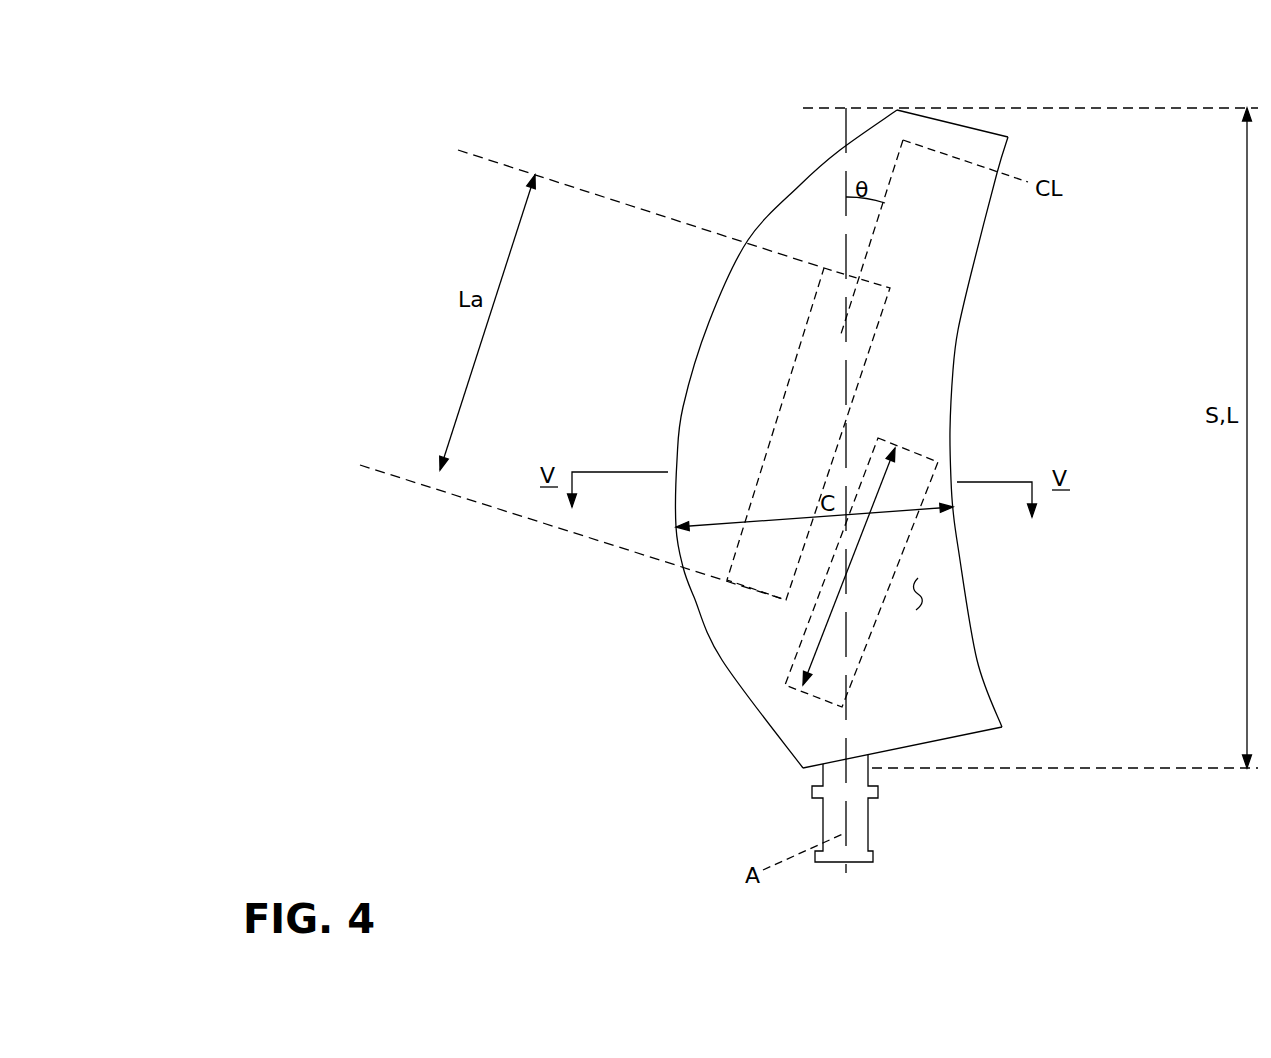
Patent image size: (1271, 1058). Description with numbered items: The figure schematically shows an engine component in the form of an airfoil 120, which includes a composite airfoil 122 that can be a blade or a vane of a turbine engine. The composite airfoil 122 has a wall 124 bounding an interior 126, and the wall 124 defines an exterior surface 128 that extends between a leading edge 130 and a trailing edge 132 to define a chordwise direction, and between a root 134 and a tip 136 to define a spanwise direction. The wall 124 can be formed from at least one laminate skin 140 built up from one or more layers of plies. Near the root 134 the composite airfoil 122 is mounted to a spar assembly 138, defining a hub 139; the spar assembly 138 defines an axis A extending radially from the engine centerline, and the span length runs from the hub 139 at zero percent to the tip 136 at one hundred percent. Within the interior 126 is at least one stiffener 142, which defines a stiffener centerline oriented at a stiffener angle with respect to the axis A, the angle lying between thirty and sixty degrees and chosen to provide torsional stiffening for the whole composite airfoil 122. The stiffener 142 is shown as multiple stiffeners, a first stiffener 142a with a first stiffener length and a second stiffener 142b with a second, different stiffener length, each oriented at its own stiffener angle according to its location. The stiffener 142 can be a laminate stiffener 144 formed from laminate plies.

The airfoil 120 is at (652, 125).
The composite airfoil 122 is at (957, 92).
The wall 124 is at (1015, 265).
The laminate skin 140 is at (923, 293).
The interior 126 is at (922, 598).
The exterior surface 128 is at (732, 453).
The leading edge 130 is at (678, 400).
The trailing edge 132 is at (953, 370).
The root 134 is at (967, 737).
The tip 136 is at (993, 132).
The spar assembly 138 is at (873, 842).
The hub 139 is at (813, 773).
The stiffener 142 is at (742, 433).
The first stiffener 142a is at (793, 360).
The laminate stiffener 144 is at (963, 572).
The second stiffener 142b is at (912, 528).